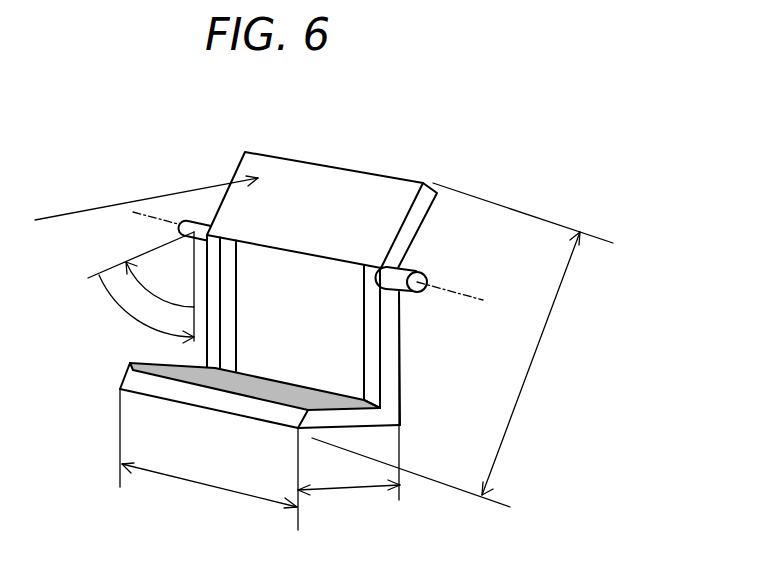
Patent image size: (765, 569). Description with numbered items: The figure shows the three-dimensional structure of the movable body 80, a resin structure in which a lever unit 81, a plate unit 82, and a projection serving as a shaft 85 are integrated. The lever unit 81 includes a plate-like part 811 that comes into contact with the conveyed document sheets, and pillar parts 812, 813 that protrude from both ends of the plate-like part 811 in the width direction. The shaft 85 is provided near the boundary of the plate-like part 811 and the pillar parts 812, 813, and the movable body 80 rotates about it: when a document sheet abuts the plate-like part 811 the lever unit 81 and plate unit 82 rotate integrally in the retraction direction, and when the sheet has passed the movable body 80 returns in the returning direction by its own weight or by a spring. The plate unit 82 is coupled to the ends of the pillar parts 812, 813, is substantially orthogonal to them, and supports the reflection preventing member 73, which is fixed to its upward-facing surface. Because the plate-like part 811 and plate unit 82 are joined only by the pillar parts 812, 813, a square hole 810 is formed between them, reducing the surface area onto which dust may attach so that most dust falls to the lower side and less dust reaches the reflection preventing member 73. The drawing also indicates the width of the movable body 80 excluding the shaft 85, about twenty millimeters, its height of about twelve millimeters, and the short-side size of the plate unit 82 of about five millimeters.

The movable body 80 is at (188, 104).
The lever unit 81 is at (428, 110).
The plate-like part 811 is at (368, 198).
The pillar part 812 is at (232, 280).
The pillar part 813 is at (370, 312).
The square hole 810 is at (362, 332).
The shaft 85 is at (178, 231).
The reflection preventing member 73 is at (282, 388).
The plate unit 82 is at (234, 418).